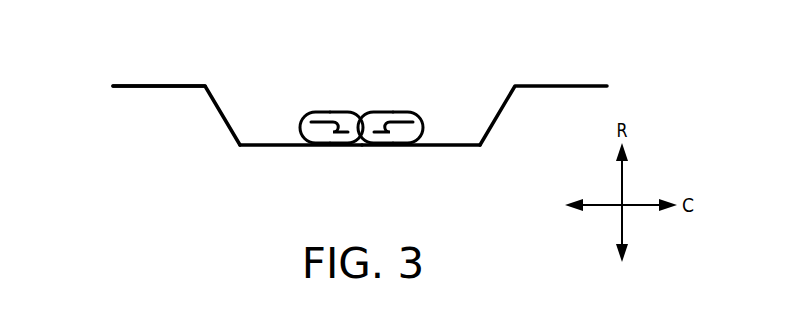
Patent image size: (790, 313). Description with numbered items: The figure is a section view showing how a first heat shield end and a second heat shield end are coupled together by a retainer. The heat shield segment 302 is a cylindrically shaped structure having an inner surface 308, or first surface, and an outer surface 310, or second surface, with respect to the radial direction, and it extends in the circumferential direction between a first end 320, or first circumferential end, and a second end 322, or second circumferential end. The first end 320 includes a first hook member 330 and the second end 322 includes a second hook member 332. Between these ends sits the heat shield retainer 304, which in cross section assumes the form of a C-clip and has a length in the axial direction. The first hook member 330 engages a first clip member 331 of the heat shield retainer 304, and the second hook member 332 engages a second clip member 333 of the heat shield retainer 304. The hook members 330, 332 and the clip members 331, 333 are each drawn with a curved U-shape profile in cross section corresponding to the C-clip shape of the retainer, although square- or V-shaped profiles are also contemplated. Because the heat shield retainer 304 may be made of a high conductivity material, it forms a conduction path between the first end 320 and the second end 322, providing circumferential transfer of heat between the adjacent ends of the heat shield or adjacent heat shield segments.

The heat shield segment 302 is at (570, 87).
The heat shield retainer 304 is at (354, 144).
The inner surface 308 is at (161, 84).
The outer surface 310 is at (142, 88).
The first end 320 is at (445, 147).
The second end 322 is at (280, 147).
The first hook member 330 is at (420, 162).
The first clip member 331 is at (423, 128).
The second hook member 332 is at (295, 153).
The second clip member 333 is at (300, 125).